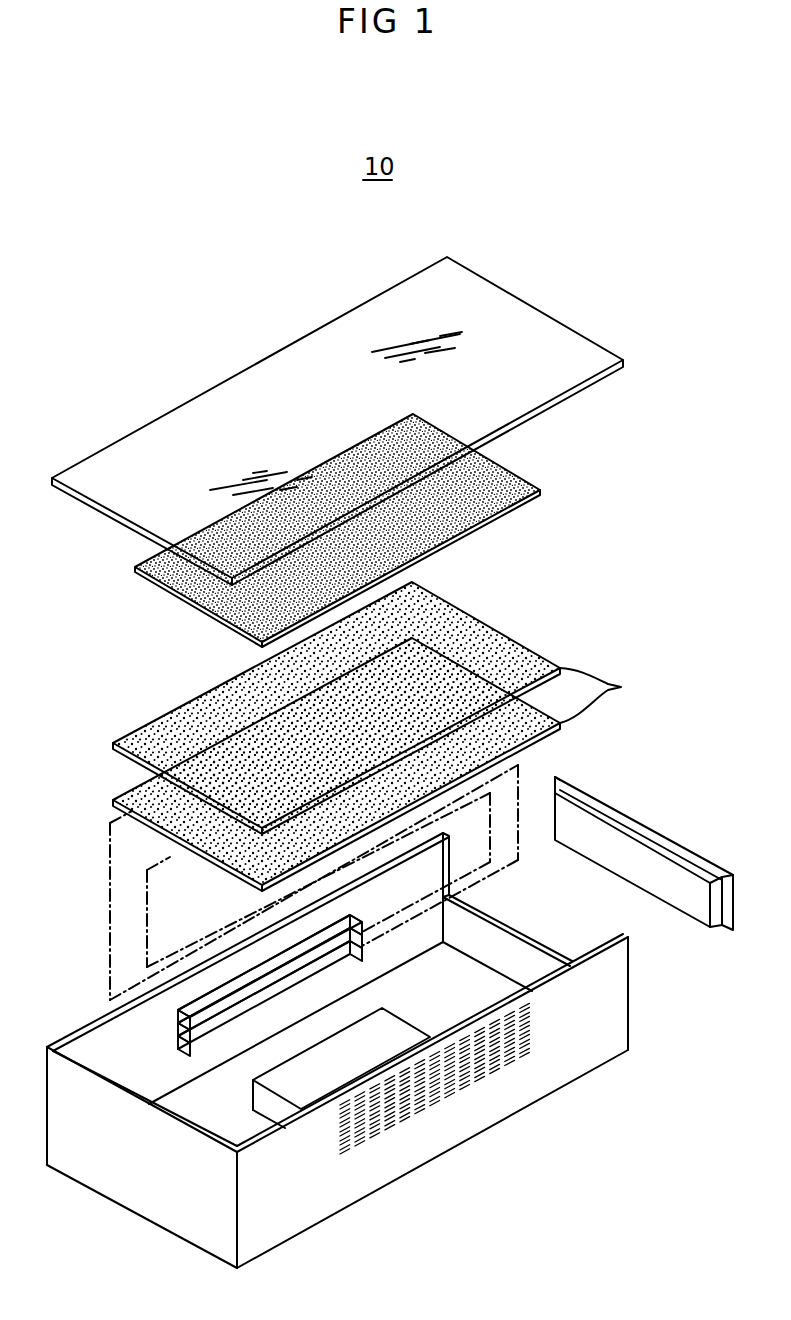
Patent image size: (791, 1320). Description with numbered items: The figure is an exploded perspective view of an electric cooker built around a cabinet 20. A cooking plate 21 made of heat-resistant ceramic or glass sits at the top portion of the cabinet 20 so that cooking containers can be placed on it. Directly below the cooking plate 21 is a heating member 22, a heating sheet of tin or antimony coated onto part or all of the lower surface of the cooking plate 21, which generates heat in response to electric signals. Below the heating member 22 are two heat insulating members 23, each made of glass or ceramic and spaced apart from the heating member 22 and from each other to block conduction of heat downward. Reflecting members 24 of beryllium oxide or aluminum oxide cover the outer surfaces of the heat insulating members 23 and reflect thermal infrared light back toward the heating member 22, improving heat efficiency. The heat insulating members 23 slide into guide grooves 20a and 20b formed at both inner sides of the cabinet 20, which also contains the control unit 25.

The cabinet 20 is at (447, 1140).
The guide groove 20a is at (176, 1030).
The guide groove 20b is at (179, 1043).
The cooking plate 21 is at (530, 318).
The heating member 22 is at (518, 457).
The heat insulating member 23 is at (621, 687).
The reflecting member 24 is at (500, 648).
The control unit 25 is at (273, 1107).